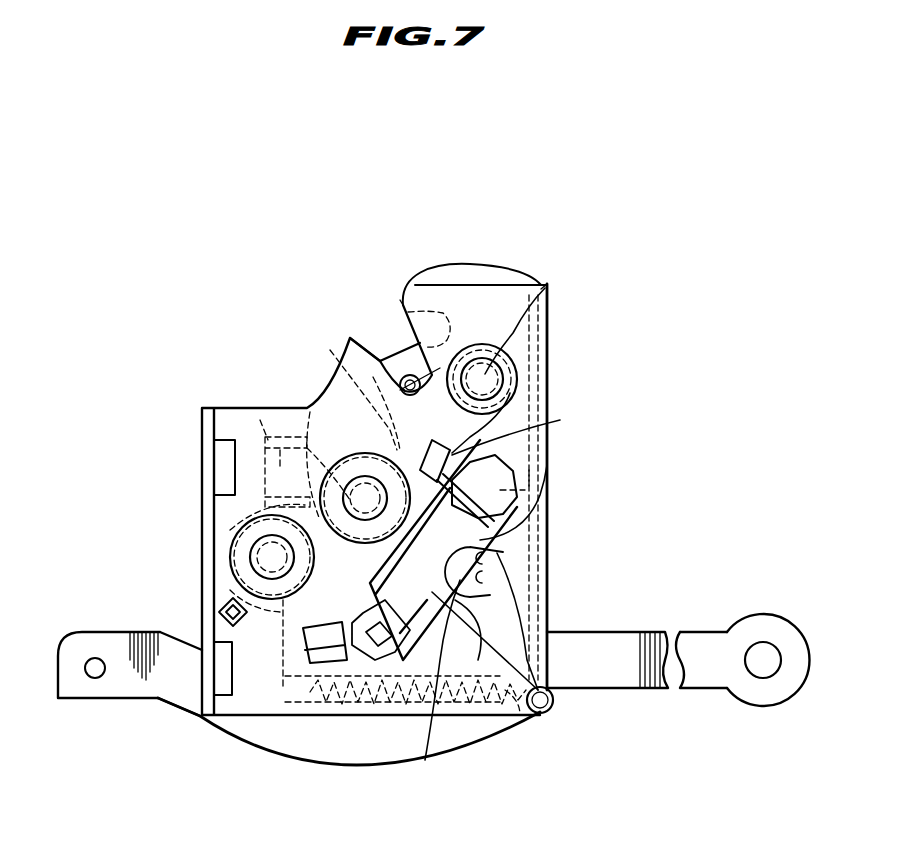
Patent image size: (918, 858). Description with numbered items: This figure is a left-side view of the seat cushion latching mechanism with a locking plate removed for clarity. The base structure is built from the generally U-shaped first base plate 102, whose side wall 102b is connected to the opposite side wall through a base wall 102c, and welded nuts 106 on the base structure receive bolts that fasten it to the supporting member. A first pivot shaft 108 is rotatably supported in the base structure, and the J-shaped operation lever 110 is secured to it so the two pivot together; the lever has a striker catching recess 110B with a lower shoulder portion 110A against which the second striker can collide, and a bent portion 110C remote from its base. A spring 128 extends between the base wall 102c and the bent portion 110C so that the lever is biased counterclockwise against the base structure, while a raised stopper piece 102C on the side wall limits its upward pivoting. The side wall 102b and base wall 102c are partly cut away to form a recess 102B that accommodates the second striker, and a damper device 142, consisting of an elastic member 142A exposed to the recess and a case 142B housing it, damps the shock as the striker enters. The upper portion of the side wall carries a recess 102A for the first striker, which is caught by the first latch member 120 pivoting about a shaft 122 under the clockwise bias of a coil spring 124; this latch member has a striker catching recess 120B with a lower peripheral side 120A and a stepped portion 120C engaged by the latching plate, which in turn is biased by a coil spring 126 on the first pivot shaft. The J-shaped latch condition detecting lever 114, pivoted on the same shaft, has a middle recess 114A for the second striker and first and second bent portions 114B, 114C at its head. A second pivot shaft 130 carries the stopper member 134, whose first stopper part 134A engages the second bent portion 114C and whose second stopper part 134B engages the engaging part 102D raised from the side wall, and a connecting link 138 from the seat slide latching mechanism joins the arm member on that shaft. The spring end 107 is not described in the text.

The first base plate 102 is at (548, 372).
The recess 102A is at (352, 336).
The opening or recess 102B is at (483, 557).
The raised stopper piece 102C is at (327, 660).
The engaging part 102D is at (216, 614).
The side wall 102b is at (540, 480).
The base wall 102c is at (548, 330).
The welded nuts 106 is at (222, 455).
The spring end 107 is at (497, 733).
The first pivot shaft 108 is at (365, 498).
The operation lever 110 is at (373, 748).
The lower shoulder portion 110A is at (517, 578).
The striker catching recess 110B is at (548, 592).
The bent portion 110C is at (283, 690).
The latch condition detecting lever 114 is at (300, 440).
The recess 114A is at (525, 493).
The first bent portion 114B is at (280, 450).
The second bent portion 114C is at (260, 420).
The first latch member 120 is at (480, 268).
The lower peripheral side 120A is at (395, 343).
The striker catching recess 120B is at (428, 305).
The stepped portion 120C is at (380, 430).
The shaft 122 is at (549, 287).
The coil spring 124 is at (485, 374).
The coil spring 126 is at (530, 425).
The spring 128 is at (553, 706).
The second pivot shaft 130 is at (270, 556).
The stopper member 134 is at (250, 518).
The first stopper part 134A is at (225, 520).
The second stopper part 134B is at (283, 692).
The connecting link 138 is at (765, 614).
The damper device 142 is at (442, 617).
The elastic member 142A is at (478, 628).
The case 142B is at (500, 458).